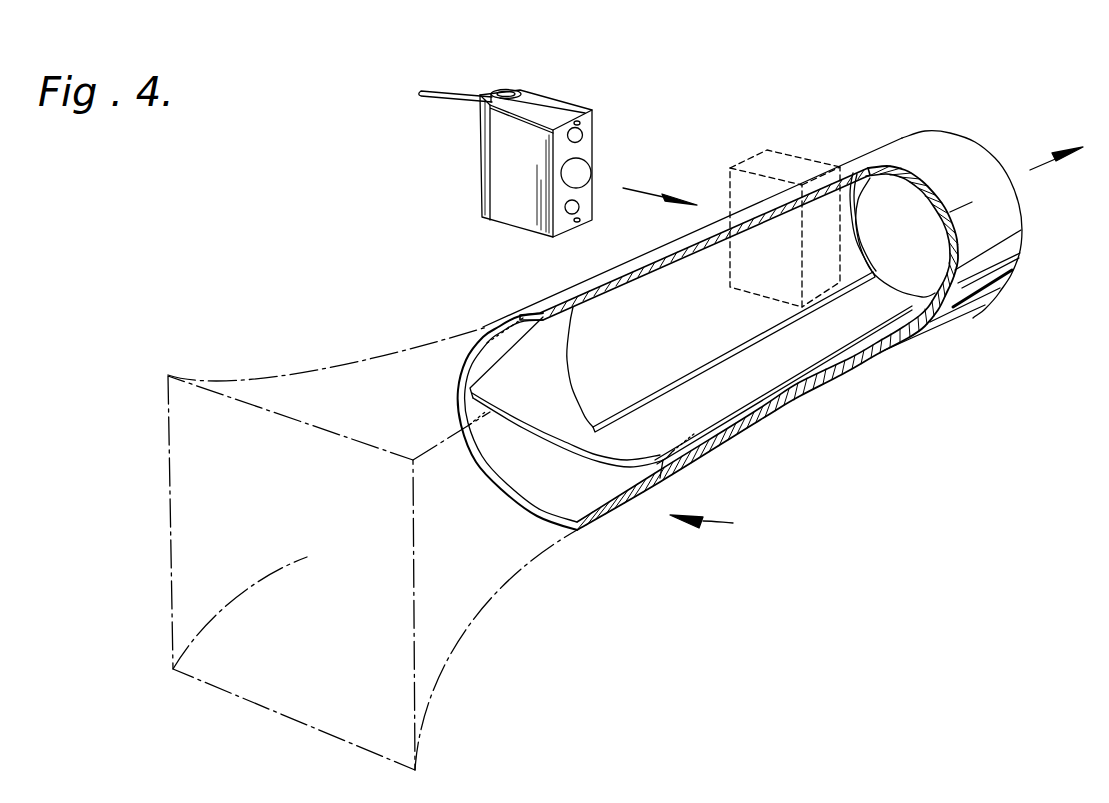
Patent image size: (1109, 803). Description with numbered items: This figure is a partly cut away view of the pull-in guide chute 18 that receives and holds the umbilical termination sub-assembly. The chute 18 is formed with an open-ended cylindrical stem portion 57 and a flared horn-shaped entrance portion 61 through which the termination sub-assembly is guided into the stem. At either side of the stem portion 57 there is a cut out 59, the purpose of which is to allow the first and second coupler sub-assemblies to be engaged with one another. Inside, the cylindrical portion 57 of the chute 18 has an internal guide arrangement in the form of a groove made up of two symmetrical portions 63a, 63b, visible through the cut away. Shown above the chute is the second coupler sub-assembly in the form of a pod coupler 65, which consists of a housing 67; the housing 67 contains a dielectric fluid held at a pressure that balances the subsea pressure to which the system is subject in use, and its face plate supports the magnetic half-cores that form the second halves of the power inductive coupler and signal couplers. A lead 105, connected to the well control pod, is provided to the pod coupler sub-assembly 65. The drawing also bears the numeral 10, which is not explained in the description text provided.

The detector unit 10 is at (593, 143).
The pull-in guide chute 18 is at (717, 525).
The cylindrical stem portion 57 is at (903, 138).
The cut out 59 is at (660, 370).
The horn-shaped entrance portion 61 is at (487, 627).
The groove portion 63a is at (485, 362).
The groove portion 63b is at (633, 463).
The pod coupler 65 is at (473, 198).
The housing 67 is at (567, 103).
The lead 105 is at (423, 97).